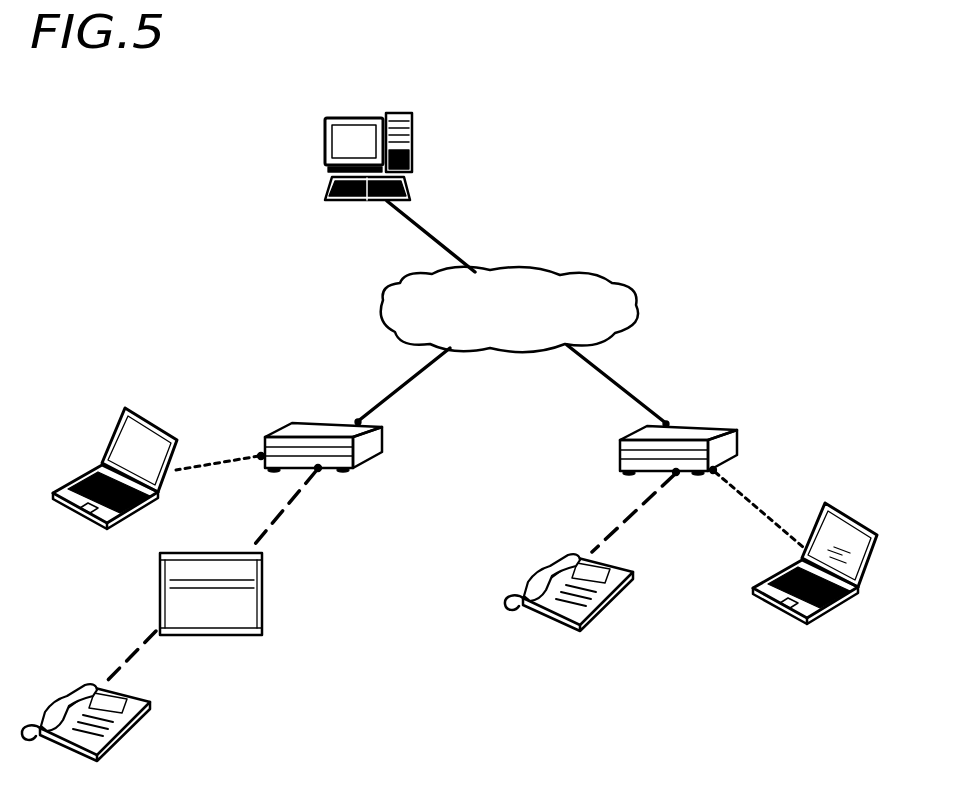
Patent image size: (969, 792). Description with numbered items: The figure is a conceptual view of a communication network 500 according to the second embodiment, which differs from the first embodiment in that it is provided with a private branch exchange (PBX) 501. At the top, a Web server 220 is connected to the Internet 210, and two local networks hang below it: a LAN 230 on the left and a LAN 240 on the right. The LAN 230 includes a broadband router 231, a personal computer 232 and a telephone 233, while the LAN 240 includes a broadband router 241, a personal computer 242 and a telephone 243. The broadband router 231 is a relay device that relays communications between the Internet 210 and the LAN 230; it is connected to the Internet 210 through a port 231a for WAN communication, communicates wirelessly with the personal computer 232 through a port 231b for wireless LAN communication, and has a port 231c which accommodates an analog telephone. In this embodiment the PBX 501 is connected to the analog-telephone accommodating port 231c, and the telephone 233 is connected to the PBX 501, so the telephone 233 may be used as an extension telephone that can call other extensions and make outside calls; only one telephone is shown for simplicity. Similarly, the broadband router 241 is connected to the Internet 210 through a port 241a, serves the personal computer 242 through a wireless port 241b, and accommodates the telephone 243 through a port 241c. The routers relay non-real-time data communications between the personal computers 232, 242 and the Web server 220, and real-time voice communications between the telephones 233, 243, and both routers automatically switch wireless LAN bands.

The communication network 500 is at (703, 136).
The Web server 220 is at (413, 138).
The Internet 210 is at (548, 270).
The LAN 230 is at (195, 360).
The broadband router 231 is at (370, 452).
The port for WAN communication 231a is at (360, 423).
The port for wireless LAN communication 231b is at (258, 454).
The port which accommodates an analog telephone 231c is at (320, 472).
The personal computer 232 is at (112, 432).
The private branch exchange (PBX) 501 is at (263, 595).
The telephone 233 is at (153, 703).
The LAN 240 is at (832, 422).
The broadband router 241 is at (620, 457).
The port for WAN communications 241a is at (658, 423).
The port for wireless LAN communications 241b is at (715, 468).
The port which accommodates analog telephones 241c is at (677, 476).
The personal computer 242 is at (863, 523).
The telephone 243 is at (633, 570).